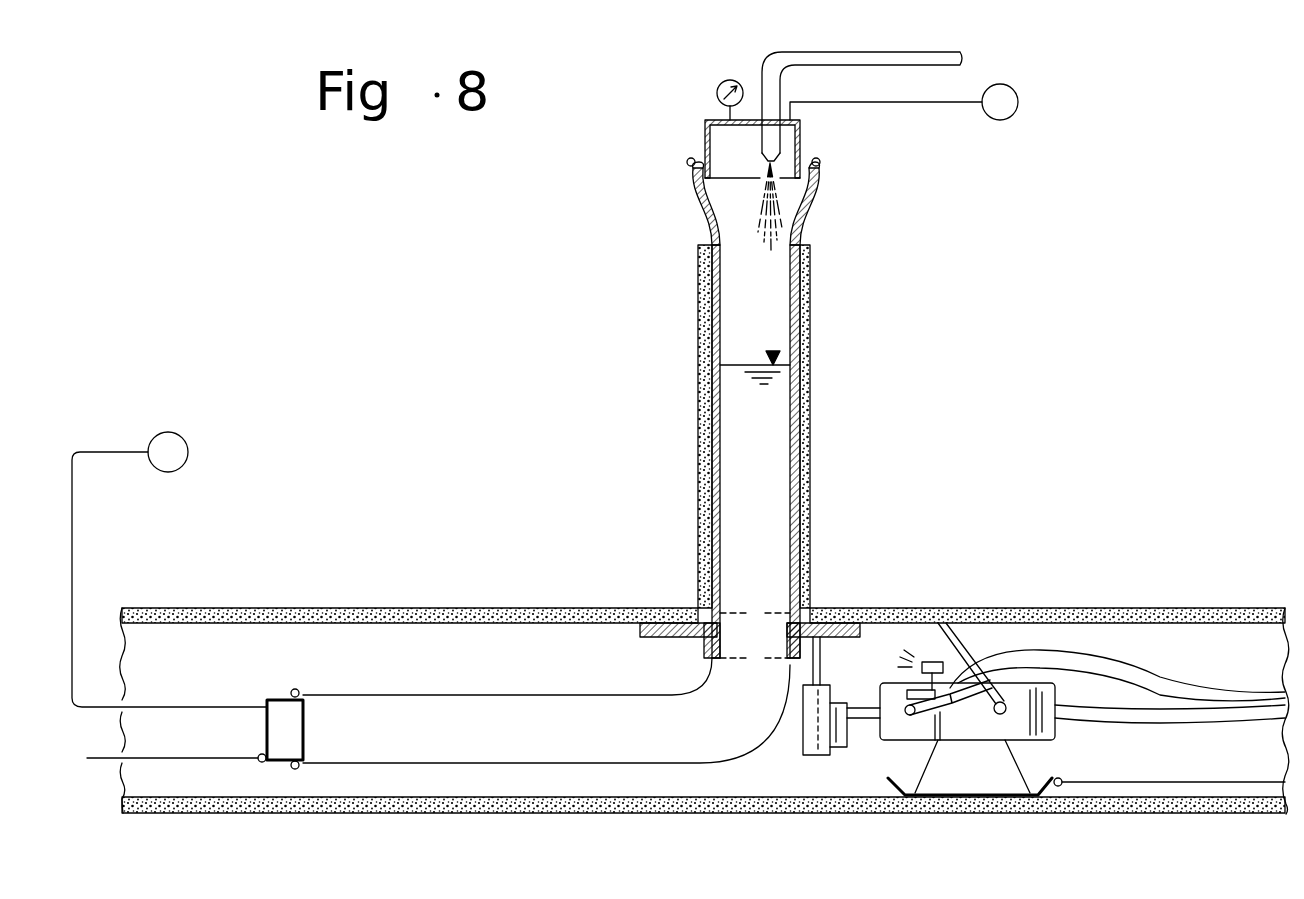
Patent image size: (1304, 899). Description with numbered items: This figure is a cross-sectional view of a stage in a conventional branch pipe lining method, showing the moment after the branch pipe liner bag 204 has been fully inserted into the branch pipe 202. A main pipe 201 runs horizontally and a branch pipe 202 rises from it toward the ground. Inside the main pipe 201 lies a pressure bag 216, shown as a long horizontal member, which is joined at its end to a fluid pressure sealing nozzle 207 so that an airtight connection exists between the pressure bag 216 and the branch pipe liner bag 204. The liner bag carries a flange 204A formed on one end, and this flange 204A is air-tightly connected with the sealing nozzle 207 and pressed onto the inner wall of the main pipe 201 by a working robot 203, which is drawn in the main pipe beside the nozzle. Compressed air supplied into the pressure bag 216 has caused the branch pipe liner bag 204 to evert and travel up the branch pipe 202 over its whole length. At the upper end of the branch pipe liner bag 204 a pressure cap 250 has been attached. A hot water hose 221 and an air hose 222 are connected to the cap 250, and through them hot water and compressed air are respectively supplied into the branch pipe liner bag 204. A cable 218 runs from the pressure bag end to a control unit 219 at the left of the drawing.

The main pipe 201 is at (1033, 610).
The branch pipe 202 is at (810, 459).
The working robot 203 is at (958, 730).
The branch pipe liner bag 204 is at (812, 223).
The flange 204A is at (820, 625).
The fluid pressure sealing nozzle 207 is at (640, 637).
The pressure bag 216 is at (471, 691).
The control cable 218 is at (72, 575).
The controller 219 is at (188, 452).
The hot water hose 221 is at (770, 63).
The air hose 222 is at (887, 103).
The pressure cap 250 is at (705, 132).